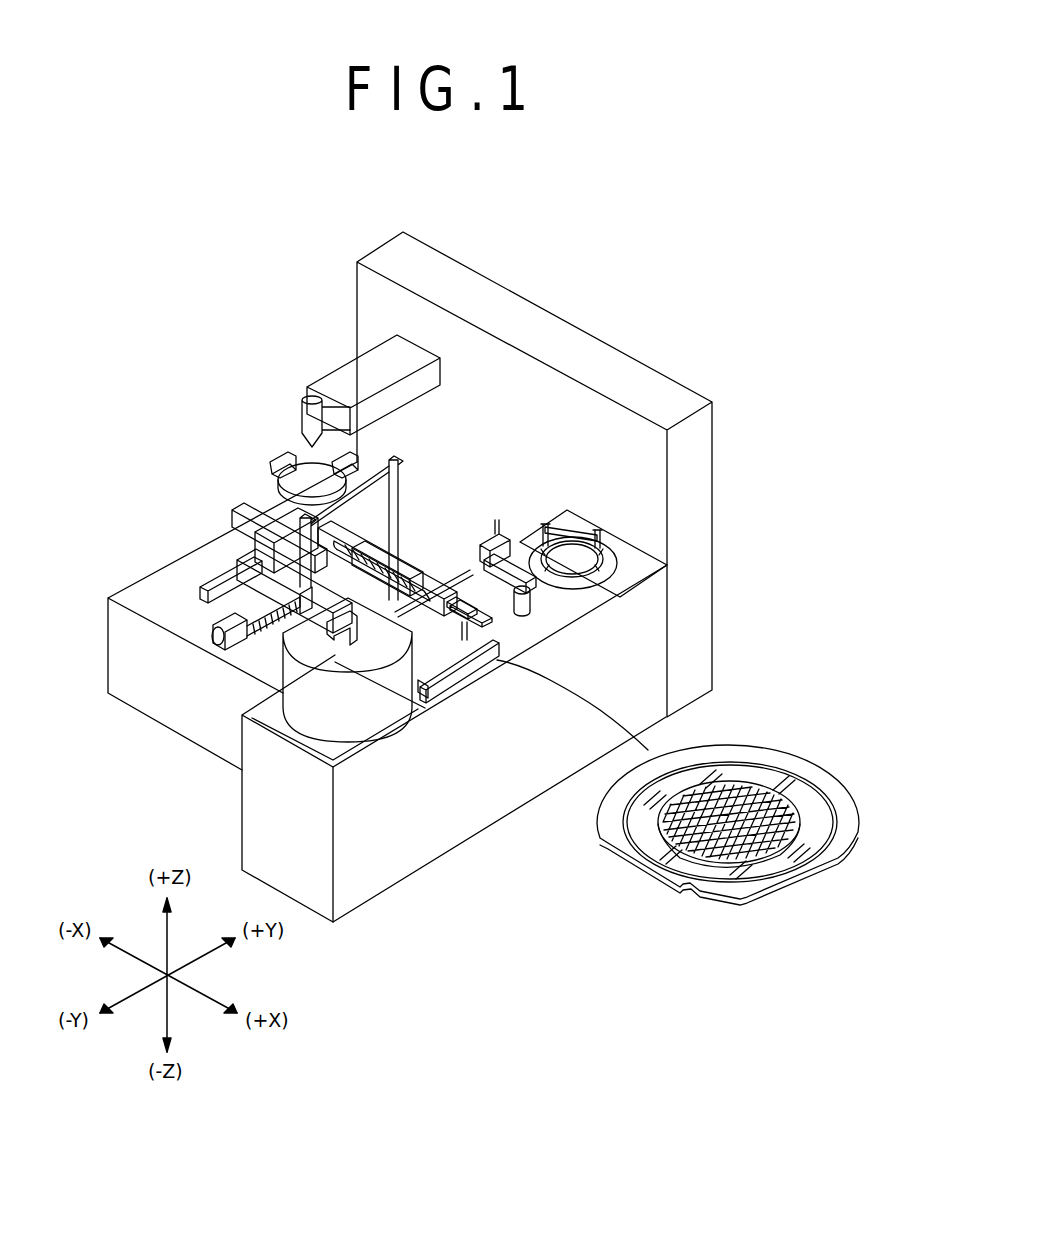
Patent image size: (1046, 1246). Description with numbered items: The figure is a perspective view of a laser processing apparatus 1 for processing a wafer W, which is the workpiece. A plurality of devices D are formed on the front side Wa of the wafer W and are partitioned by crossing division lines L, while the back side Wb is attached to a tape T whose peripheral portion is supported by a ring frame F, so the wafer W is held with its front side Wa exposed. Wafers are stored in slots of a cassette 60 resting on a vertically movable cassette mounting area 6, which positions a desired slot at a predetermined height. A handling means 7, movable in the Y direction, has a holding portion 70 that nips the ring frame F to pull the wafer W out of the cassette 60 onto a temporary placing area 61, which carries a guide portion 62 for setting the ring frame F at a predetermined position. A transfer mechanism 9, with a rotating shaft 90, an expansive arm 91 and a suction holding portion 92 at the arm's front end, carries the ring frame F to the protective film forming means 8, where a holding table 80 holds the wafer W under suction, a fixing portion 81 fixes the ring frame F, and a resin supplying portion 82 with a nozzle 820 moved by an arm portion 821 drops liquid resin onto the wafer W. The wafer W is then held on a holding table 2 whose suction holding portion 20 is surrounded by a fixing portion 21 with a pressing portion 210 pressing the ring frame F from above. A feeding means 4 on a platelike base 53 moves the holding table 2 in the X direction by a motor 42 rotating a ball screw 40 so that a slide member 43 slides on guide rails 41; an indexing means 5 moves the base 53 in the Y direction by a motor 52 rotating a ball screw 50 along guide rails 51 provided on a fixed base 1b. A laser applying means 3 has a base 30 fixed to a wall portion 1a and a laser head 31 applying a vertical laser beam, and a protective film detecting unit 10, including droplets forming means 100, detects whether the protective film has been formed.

The laser processing apparatus 1 is at (232, 318).
The wall portion 1a is at (545, 335).
The fixed base 1b is at (108, 670).
The holding table 2 is at (280, 497).
The suction holding portion 20 is at (312, 478).
The fixing portion 21 is at (268, 465).
The pressing portion 210 is at (290, 470).
The laser applying means 3 is at (312, 392).
The base 30 is at (385, 360).
The laser head 31 is at (320, 405).
The protective film detecting unit 10 is at (395, 458).
The droplets forming means 100 is at (398, 470).
The feeding means 4 is at (410, 660).
The ball screw 40 is at (380, 555).
The guide rails 41 is at (382, 640).
The motor 42 is at (460, 608).
The slide member 43 is at (232, 518).
The indexing means 5 is at (185, 592).
The ball screw 50 is at (216, 640).
The guide rails 51 is at (205, 600).
The motor 52 is at (250, 628).
The base 53 is at (300, 625).
The cassette mounting area 6 is at (333, 748).
The cassette 60 is at (307, 717).
The temporary placing area 61 is at (452, 622).
The guide portion 62 is at (430, 688).
The handling means 7 is at (490, 626).
The holding portion 70 is at (475, 660).
The protective film forming means 8 is at (625, 540).
The holding table 80 is at (600, 565).
The fixing portion 81 is at (622, 545).
The resin supplying portion 82 is at (570, 525).
The nozzle 820 is at (598, 533).
The arm portion 821 is at (566, 500).
The transfer mechanism 9 is at (543, 590).
The rotating shaft 90 is at (530, 606).
The expansive arm 91 is at (517, 560).
The suction holding portion 92 is at (497, 533).
The devices D is at (735, 782).
The tape T is at (755, 768).
The ring frame F is at (838, 805).
The wafer W is at (668, 862).
The front side Wa is at (635, 826).
The back side Wb is at (720, 872).
The division lines L is at (642, 865).